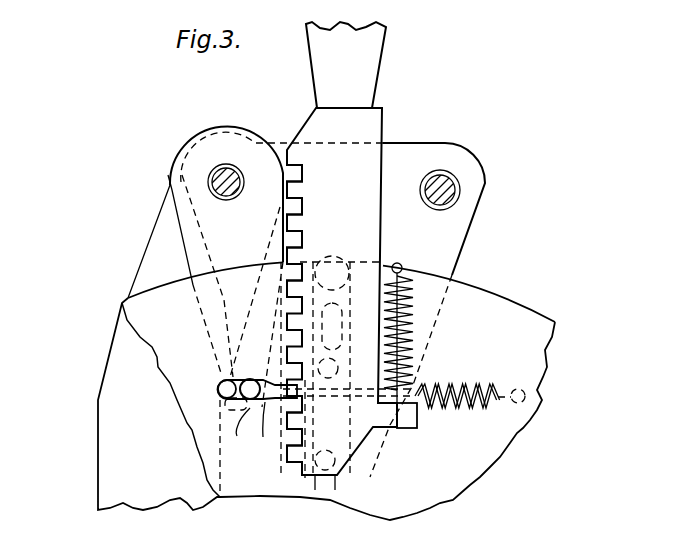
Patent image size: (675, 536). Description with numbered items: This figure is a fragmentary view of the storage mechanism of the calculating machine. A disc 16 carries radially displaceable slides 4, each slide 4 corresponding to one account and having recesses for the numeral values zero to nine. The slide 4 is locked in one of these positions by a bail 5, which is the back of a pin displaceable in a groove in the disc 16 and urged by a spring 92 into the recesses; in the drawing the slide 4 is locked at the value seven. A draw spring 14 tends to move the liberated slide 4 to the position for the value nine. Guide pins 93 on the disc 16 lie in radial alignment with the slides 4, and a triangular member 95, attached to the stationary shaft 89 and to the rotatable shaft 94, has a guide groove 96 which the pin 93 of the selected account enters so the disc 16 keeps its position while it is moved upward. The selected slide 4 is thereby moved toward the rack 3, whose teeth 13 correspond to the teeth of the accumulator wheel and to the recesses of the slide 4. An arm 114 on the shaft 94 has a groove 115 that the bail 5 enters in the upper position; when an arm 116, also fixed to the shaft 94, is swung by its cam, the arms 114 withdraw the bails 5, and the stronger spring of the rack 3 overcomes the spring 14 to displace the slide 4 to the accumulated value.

The rack 3 is at (357, 73).
The slide 4 is at (378, 136).
The bail 5 is at (222, 381).
The teeth 13 is at (284, 440).
The draw spring 14 is at (410, 343).
The disc 16 is at (510, 302).
The stationary shaft 89 is at (437, 188).
The spring 92 is at (492, 382).
The guide pin 93 is at (292, 260).
The shaft 94 is at (213, 182).
The triangular member 95 is at (455, 248).
The guide groove 96 is at (320, 268).
The arm 114 is at (190, 236).
The groove 115 is at (249, 431).
The arm 116 is at (110, 447).